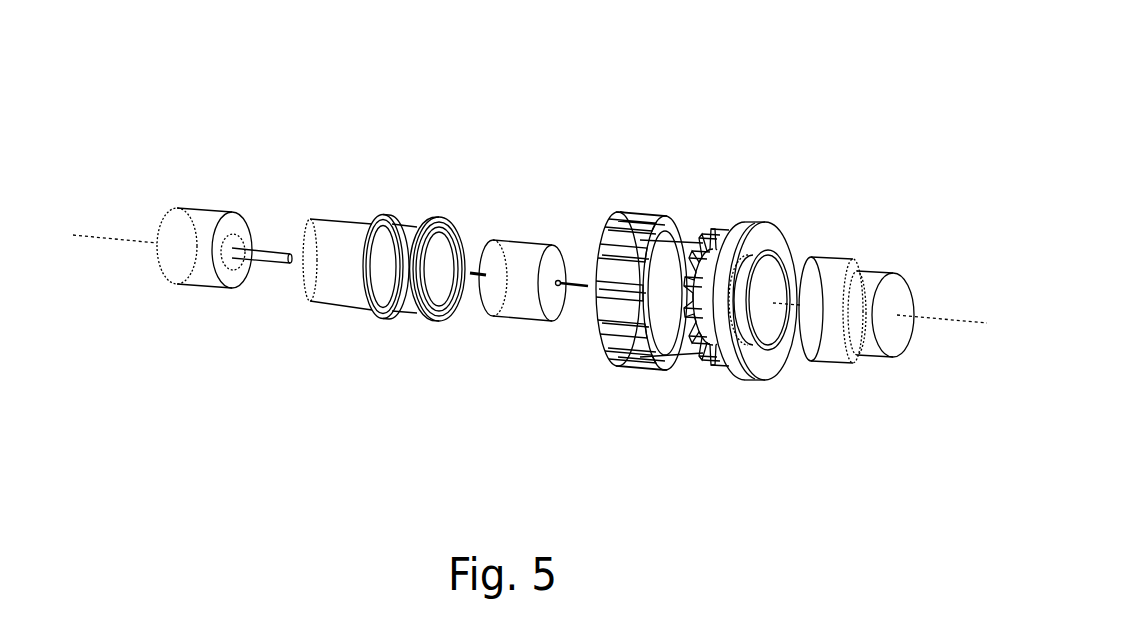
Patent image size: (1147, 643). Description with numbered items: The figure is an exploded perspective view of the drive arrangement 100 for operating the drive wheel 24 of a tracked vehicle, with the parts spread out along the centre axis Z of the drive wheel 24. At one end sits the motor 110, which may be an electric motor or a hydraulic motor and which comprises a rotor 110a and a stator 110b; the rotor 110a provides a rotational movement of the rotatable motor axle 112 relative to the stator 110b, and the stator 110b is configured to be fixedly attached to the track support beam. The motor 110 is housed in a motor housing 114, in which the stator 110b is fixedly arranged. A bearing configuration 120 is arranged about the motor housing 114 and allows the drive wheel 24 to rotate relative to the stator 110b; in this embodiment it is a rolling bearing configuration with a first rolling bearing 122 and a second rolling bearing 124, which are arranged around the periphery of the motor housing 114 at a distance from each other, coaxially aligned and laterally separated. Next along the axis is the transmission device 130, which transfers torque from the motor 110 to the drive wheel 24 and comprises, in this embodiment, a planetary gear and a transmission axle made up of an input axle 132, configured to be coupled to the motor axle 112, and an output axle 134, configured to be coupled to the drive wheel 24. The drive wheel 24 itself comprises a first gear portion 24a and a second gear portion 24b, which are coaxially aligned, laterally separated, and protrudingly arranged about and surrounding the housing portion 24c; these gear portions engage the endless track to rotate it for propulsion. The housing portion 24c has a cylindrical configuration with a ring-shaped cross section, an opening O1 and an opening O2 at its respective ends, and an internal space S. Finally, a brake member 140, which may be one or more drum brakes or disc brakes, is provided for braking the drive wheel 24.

The drive arrangement 100 is at (630, 86).
The motor 110 is at (195, 285).
The rotor 110a is at (243, 262).
The stator 110b is at (231, 284).
The motor axle 112 is at (270, 248).
The motor housing 114 is at (335, 302).
The bearing configuration 120 is at (427, 320).
The first rolling bearing 122 is at (383, 213).
The second rolling bearing 124 is at (438, 216).
The transmission device 130 is at (513, 320).
The input axle 132 is at (482, 268).
The output axle 134 is at (587, 282).
The drive wheel 24 is at (713, 202).
The first gear portion 24a is at (620, 370).
The second gear portion 24b is at (713, 375).
The housing portion 24c is at (668, 312).
The brake member 140 is at (828, 360).
The centre axis Z is at (128, 238).
The opening O1 is at (603, 250).
The opening O2 is at (765, 283).
The internal space S is at (755, 305).